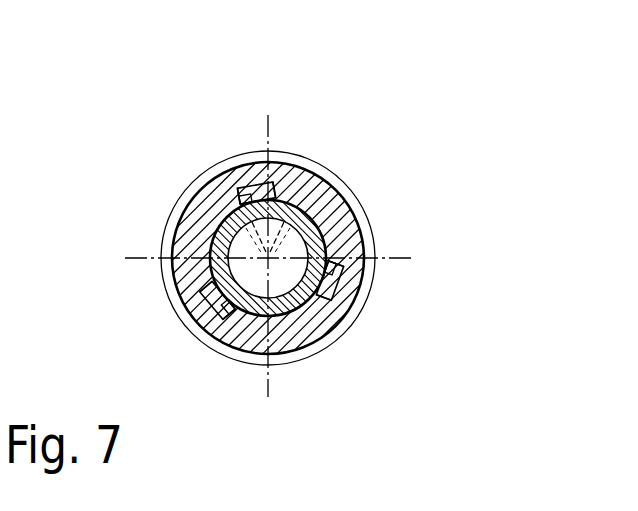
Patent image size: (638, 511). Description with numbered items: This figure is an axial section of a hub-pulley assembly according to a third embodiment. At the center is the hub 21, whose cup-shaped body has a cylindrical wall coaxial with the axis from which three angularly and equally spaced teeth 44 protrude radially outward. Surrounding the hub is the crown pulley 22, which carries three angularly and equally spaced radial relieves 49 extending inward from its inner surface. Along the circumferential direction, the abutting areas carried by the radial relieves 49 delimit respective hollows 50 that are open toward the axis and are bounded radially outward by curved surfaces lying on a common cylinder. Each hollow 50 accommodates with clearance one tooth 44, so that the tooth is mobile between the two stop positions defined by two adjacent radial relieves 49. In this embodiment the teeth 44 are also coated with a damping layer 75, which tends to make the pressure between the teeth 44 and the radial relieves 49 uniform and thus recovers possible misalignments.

The hub 21 is at (280, 312).
The crown pulley 22 is at (352, 190).
The teeth 44 is at (268, 188).
The radial relieves 49 is at (222, 192).
The hollows 50 is at (236, 178).
The damping layer 75 is at (283, 190).